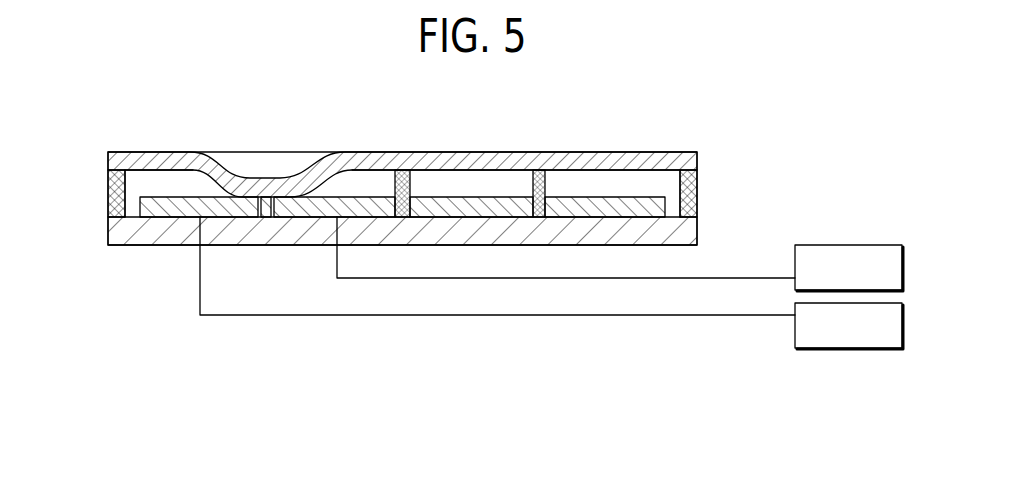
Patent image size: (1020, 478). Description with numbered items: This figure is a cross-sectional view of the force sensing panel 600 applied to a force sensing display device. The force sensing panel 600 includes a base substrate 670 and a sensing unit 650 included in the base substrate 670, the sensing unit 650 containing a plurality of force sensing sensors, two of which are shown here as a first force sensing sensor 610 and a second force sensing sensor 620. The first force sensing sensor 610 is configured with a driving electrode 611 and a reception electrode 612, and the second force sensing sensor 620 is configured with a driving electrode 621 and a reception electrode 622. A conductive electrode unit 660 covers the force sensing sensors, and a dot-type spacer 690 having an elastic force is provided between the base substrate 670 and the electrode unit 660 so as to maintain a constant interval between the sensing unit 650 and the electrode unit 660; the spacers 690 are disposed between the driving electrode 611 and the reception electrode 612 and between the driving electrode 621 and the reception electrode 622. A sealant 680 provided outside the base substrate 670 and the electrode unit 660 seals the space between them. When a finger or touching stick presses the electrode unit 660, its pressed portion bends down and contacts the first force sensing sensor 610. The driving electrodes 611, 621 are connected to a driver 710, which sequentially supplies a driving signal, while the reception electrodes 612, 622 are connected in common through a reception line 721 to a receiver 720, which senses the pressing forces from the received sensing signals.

The force sensing panel 600 is at (96, 148).
The first force sensing sensor 610 is at (283, 366).
The driving electrode 611 is at (292, 217).
The reception electrode 612 is at (165, 217).
The force sensing sensor 620 is at (615, 366).
The driving electrode 621 is at (623, 217).
The reception electrode 622 is at (498, 217).
The sensing unit 650 is at (195, 404).
The electrode unit 660 is at (697, 154).
The base substrate 670 is at (697, 230).
The sealant 680 is at (697, 189).
The spacer 690 is at (540, 169).
The driver 710 is at (832, 281).
The receiver 720 is at (832, 339).
The reception line 721 is at (720, 315).